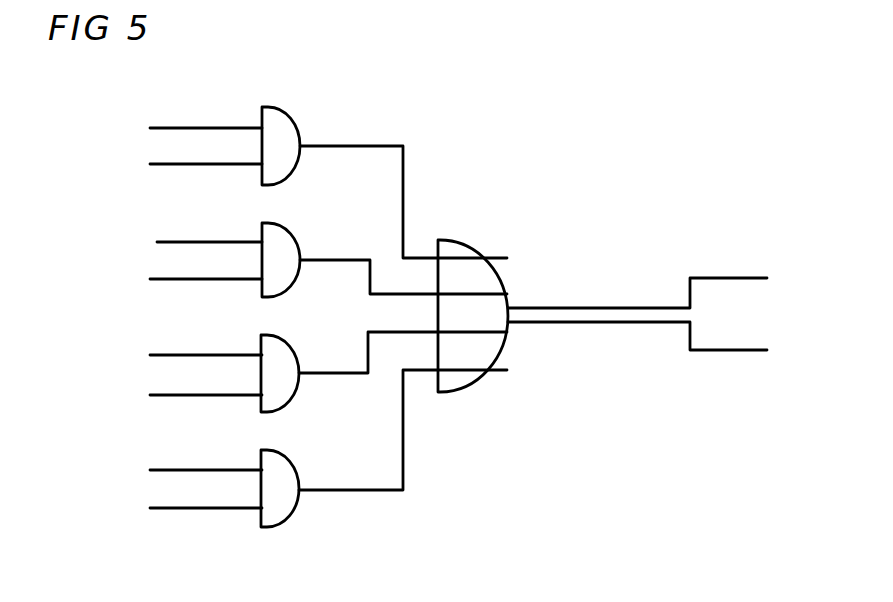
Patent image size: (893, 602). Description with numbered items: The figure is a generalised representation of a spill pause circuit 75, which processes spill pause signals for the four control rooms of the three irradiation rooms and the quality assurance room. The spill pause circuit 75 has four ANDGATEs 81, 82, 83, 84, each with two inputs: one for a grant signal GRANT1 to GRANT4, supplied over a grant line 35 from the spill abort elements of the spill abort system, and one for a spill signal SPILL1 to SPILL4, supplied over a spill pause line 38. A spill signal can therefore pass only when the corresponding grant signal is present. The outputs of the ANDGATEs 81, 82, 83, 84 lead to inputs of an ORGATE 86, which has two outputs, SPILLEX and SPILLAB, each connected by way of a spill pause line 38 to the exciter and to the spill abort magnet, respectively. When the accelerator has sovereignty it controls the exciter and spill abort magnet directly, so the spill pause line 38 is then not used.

The grant lines 35 is at (201, 128).
The spill pause lines 38 is at (200, 165).
The spill pause circuit 75 is at (652, 168).
The ANDGATE 81 is at (290, 176).
The ANDGATE 82 is at (288, 288).
The ANDGATE 83 is at (288, 402).
The ANDGATE 84 is at (288, 518).
The ORGATE 86 is at (478, 386).